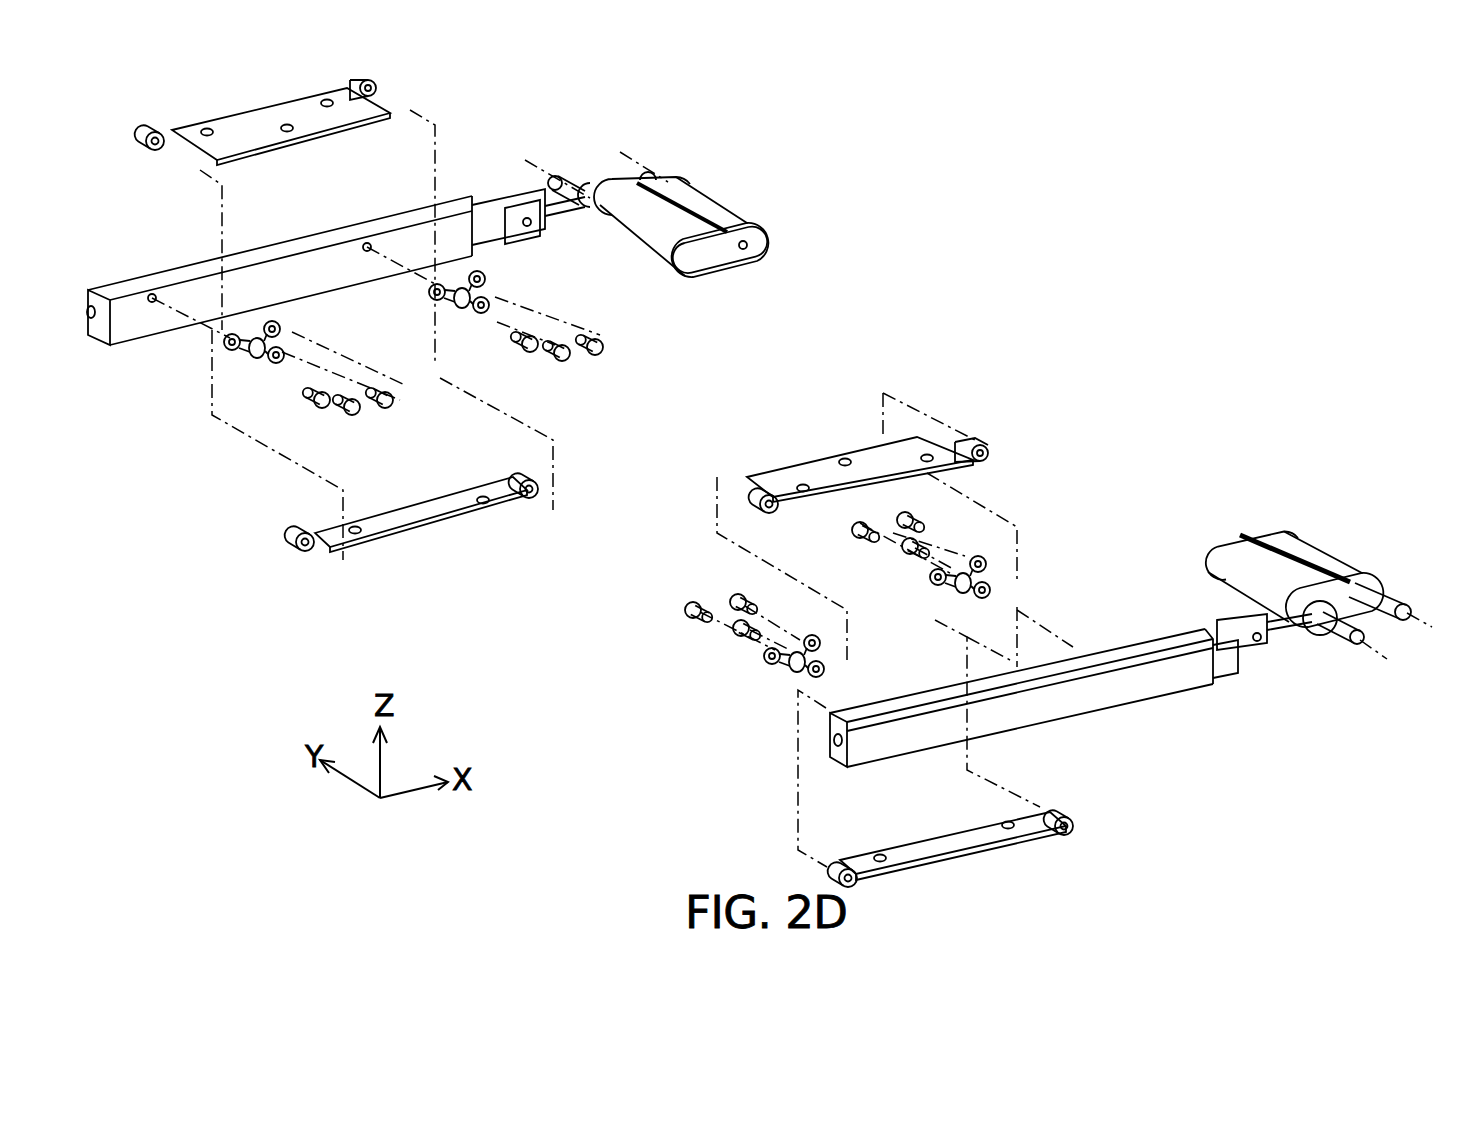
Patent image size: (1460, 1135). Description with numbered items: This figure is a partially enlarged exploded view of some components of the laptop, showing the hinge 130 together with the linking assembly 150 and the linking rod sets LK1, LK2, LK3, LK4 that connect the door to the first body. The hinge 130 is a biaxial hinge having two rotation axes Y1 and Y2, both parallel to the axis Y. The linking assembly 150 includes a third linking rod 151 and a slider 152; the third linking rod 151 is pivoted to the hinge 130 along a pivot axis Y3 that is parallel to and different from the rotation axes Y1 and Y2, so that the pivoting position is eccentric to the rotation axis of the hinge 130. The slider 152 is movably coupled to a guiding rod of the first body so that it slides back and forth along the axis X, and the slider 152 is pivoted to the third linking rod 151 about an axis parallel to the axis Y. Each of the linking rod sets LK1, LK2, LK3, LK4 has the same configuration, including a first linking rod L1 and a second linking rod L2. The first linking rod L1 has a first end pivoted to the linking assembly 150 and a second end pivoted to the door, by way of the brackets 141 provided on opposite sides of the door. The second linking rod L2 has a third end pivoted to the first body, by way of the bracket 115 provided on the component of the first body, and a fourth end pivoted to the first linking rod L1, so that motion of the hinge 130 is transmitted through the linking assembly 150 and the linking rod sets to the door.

The bracket 115 is at (245, 118).
The hinge 130 is at (730, 200).
The bracket 141 is at (420, 525).
The linking assembly 150 is at (1318, 152).
The third linking rod 151 is at (568, 218).
The slider 152 is at (326, 243).
The linking rod set LK1 is at (197, 348).
The linking rod set LK2 is at (520, 282).
The linking rod set LK3 is at (767, 682).
The linking rod set LK4 is at (1000, 562).
The first linking rod L1 is at (252, 362).
The second linking rod L2 is at (270, 332).
The rotation axis Y1 is at (957, 411).
The rotation axis Y2 is at (1013, 388).
The pivot axis Y3 is at (938, 425).